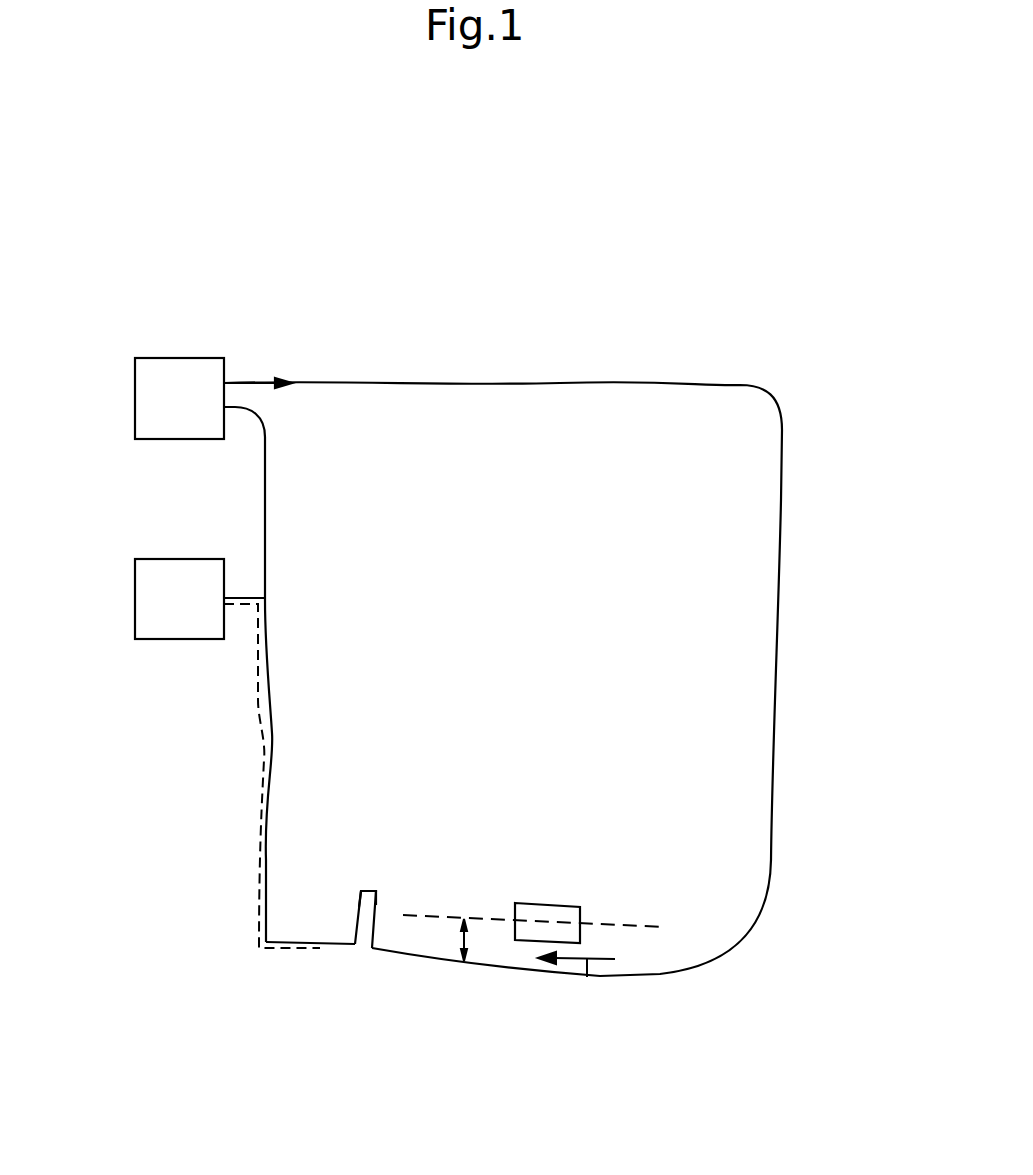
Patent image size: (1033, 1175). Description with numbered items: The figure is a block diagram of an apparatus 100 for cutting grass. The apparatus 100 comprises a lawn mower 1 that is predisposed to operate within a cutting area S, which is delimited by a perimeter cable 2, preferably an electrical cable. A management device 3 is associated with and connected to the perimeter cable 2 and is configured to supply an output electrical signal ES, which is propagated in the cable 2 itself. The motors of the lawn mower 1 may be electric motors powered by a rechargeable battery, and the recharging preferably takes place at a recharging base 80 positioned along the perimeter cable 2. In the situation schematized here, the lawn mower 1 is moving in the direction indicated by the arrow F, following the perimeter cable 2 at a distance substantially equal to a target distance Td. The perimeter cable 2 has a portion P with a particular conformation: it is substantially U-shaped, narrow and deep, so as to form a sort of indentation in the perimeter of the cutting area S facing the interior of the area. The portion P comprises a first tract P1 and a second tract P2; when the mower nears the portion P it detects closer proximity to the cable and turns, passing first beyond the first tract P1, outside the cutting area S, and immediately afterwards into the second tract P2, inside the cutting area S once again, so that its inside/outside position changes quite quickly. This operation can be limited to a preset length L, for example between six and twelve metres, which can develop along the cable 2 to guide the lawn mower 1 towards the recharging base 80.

The apparatus for cutting grass 100 is at (608, 340).
The lawn mower 1 is at (550, 878).
The perimeter cable 2 is at (528, 970).
The management device 3 is at (198, 414).
The recharging base 80 is at (202, 614).
The cutting area S is at (480, 445).
The electrical signal ES is at (281, 380).
The portion of the perimeter cable P is at (372, 866).
The first tract of the portion P1 is at (377, 905).
The second tract of the portion P2 is at (355, 907).
The length L is at (258, 850).
The target distance Td is at (460, 940).
The arrow indicating direction of movement F is at (587, 977).